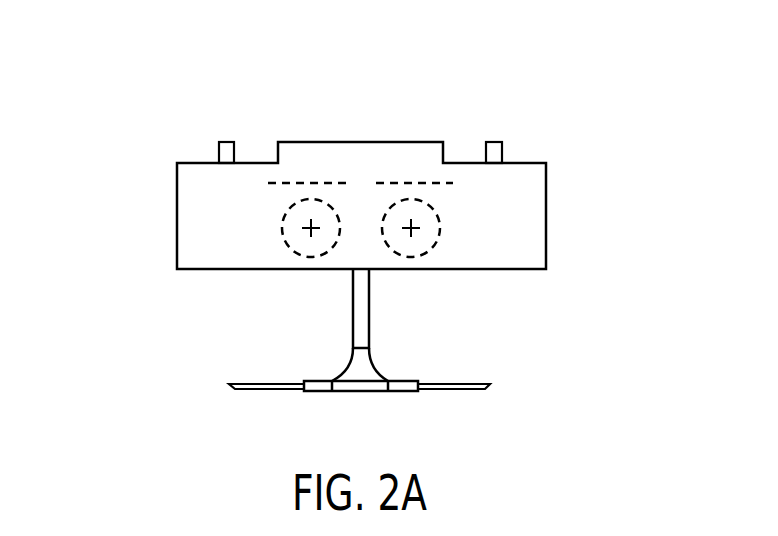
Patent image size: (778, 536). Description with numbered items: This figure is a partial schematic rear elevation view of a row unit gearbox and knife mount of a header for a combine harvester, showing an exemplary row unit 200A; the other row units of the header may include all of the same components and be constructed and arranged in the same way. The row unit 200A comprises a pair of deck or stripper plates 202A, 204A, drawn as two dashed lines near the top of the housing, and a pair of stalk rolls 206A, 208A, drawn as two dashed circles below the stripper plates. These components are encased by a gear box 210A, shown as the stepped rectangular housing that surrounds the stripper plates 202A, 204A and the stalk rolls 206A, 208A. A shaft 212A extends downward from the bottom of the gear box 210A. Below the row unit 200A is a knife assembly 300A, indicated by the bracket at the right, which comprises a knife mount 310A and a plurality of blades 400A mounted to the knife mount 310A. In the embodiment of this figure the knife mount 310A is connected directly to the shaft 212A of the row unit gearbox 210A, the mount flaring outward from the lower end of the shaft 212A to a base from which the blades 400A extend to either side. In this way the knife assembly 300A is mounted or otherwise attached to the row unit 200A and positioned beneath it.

The row unit 200A is at (624, 100).
The deck or stripper plate 202A is at (290, 183).
The deck or stripper plate 204A is at (432, 183).
The stalk roll 206A is at (285, 215).
The stalk roll 208A is at (435, 213).
The gear box 210A is at (546, 207).
The shaft 212A is at (353, 303).
The knife assembly 300A is at (381, 373).
The knife mount 310A is at (377, 363).
The blades 400A is at (262, 392).